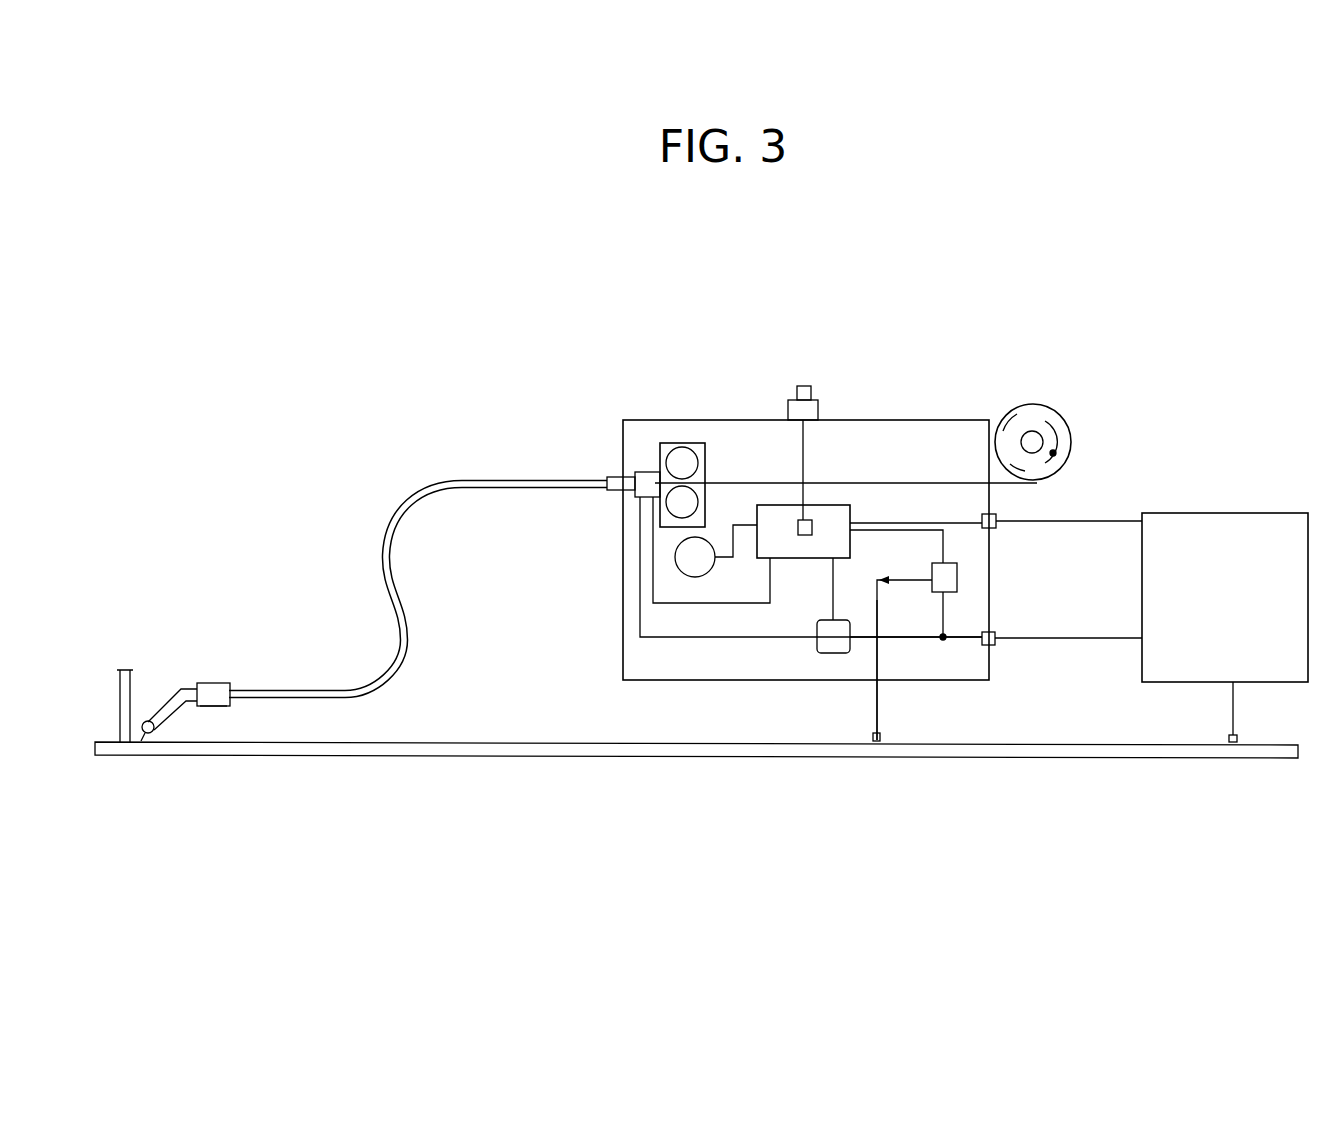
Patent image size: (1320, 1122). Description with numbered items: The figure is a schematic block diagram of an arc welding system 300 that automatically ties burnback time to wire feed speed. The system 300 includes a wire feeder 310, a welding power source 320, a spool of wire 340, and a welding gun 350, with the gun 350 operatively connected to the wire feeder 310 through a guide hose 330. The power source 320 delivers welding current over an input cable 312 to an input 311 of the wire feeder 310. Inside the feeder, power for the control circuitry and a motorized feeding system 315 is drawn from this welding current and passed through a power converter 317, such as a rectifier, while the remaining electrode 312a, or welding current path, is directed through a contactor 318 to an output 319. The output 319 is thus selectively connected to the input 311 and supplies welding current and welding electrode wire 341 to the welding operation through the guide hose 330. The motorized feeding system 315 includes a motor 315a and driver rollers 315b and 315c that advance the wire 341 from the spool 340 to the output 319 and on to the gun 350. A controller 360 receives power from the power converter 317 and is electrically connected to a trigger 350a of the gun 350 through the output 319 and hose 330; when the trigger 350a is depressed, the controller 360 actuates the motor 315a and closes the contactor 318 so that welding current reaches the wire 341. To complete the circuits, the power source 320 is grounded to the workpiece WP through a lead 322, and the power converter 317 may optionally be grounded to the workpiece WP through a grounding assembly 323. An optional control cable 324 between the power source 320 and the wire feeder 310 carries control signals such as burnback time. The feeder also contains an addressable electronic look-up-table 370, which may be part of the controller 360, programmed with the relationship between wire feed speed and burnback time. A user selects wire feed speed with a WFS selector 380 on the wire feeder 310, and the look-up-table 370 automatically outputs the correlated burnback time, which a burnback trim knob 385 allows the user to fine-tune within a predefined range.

The arc welding system 300 is at (527, 433).
The wire feeder 310 is at (748, 416).
The input 311 is at (995, 640).
The input cable 312 is at (1035, 638).
The electrode 312a is at (918, 638).
The motorized feeding system 315 is at (718, 462).
The motor 315a is at (683, 572).
The driver roller 315b is at (682, 445).
The driver roller 315c is at (670, 515).
The power converter 317 is at (957, 572).
The contactor 318 is at (832, 653).
The output 319 is at (640, 470).
The welding power source 320 is at (1235, 512).
The lead 322 is at (1237, 715).
The grounding assembly 323 is at (880, 717).
The control cable 324 is at (1083, 520).
The guide hose 330 is at (395, 593).
The spool of wire 340 is at (1062, 413).
The welding electrode wire 341 is at (977, 483).
The welding gun 350 is at (188, 680).
The trigger 350a is at (213, 706).
The controller 360 is at (802, 558).
The addressable electronic look-up-table 370 is at (807, 520).
The WFS selector 380 is at (818, 412).
The burnback trim knob 385 is at (810, 386).
The workpiece WP is at (1048, 740).